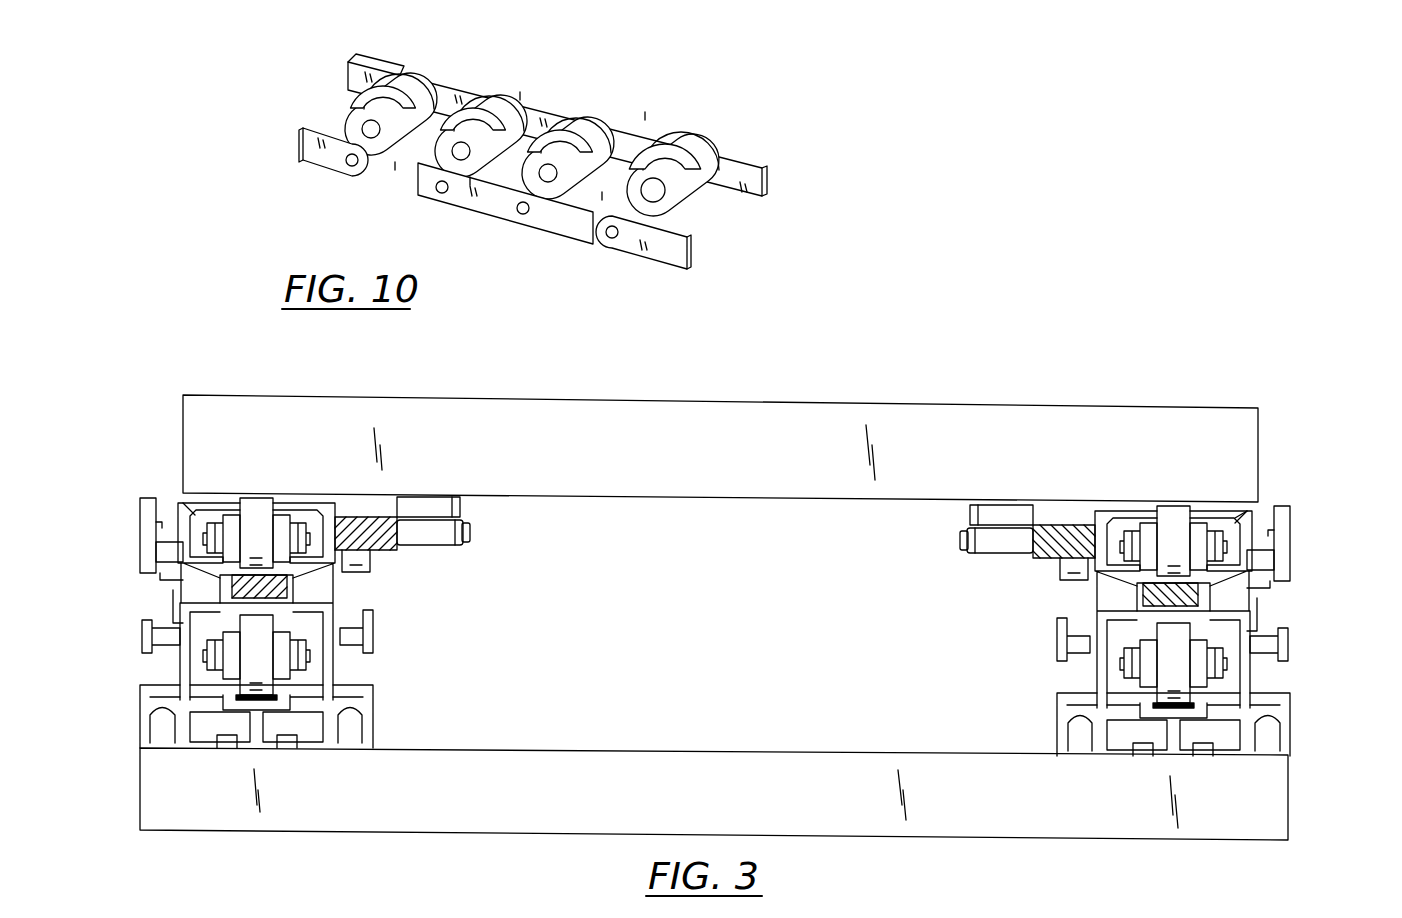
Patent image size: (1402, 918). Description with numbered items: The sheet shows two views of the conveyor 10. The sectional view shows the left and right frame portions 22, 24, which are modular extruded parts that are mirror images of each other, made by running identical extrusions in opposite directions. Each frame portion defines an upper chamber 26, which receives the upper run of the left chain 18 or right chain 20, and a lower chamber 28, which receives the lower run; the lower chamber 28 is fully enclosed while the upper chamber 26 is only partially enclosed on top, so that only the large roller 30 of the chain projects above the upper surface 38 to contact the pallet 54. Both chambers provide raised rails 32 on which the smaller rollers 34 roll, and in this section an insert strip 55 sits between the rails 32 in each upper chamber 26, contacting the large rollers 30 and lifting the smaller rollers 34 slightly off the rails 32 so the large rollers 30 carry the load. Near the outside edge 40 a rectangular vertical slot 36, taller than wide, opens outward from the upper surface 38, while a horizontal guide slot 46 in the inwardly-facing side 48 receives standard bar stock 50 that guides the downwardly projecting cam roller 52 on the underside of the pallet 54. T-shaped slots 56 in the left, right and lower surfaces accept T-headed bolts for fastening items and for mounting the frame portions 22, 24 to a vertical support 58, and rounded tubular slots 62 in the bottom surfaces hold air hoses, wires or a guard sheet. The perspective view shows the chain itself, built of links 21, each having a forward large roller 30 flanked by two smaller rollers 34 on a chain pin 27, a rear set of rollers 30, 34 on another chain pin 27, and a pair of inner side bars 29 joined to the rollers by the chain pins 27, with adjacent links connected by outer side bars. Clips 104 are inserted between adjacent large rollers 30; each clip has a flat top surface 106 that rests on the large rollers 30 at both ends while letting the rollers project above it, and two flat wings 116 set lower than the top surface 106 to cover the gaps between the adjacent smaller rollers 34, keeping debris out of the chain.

In FIG. 3, the conveyor 10 is at (1276, 402).
In FIG. 10, the left chain 18 is at (776, 136).
In FIG. 3, the left chain 18 is at (215, 552).
In FIG. 3, the right chain 20 is at (1255, 515).
In FIG. 10, the link 21 is at (395, 180).
In FIG. 3, the left frame portion 22 is at (147, 698).
In FIG. 3, the right frame portion 24 is at (1302, 537).
In FIG. 3, the upper chamber 26 is at (195, 562).
In FIG. 10, the chain pin 27 is at (612, 240).
In FIG. 3, the lower chamber 28 is at (210, 590).
In FIG. 10, the inner side bar 29 is at (585, 220).
In FIG. 10, the large roller 30 is at (402, 73).
In FIG. 3, the large roller 30 is at (266, 534).
In FIG. 3, the raised rail 32 is at (220, 565).
In FIG. 10, the smaller roller 34 is at (358, 112).
In FIG. 3, the smaller roller 34 is at (228, 505).
In FIG. 3, the vertical slot 36 is at (152, 527).
In FIG. 3, the upper surface 38 is at (200, 500).
In FIG. 3, the outside edge 40 is at (145, 501).
In FIG. 3, the horizontal guide slot 46 is at (343, 520).
In FIG. 3, the inwardly-facing side 48 is at (370, 558).
In FIG. 3, the bar stock 50 is at (390, 518).
In FIG. 3, the cam roller 52 is at (470, 533).
In FIG. 3, the pallet 54 is at (1078, 408).
In FIG. 3, the insert strip 55 is at (290, 594).
In FIG. 3, the T-shaped slot 56 is at (370, 612).
In FIG. 3, the vertical support 58 is at (552, 838).
In FIG. 3, the tubular slot 62 is at (160, 750).
In FIG. 10, the clip 104 is at (463, 80).
In FIG. 10, the flat top surface 106 is at (478, 80).
In FIG. 10, the wing 116 is at (522, 92).